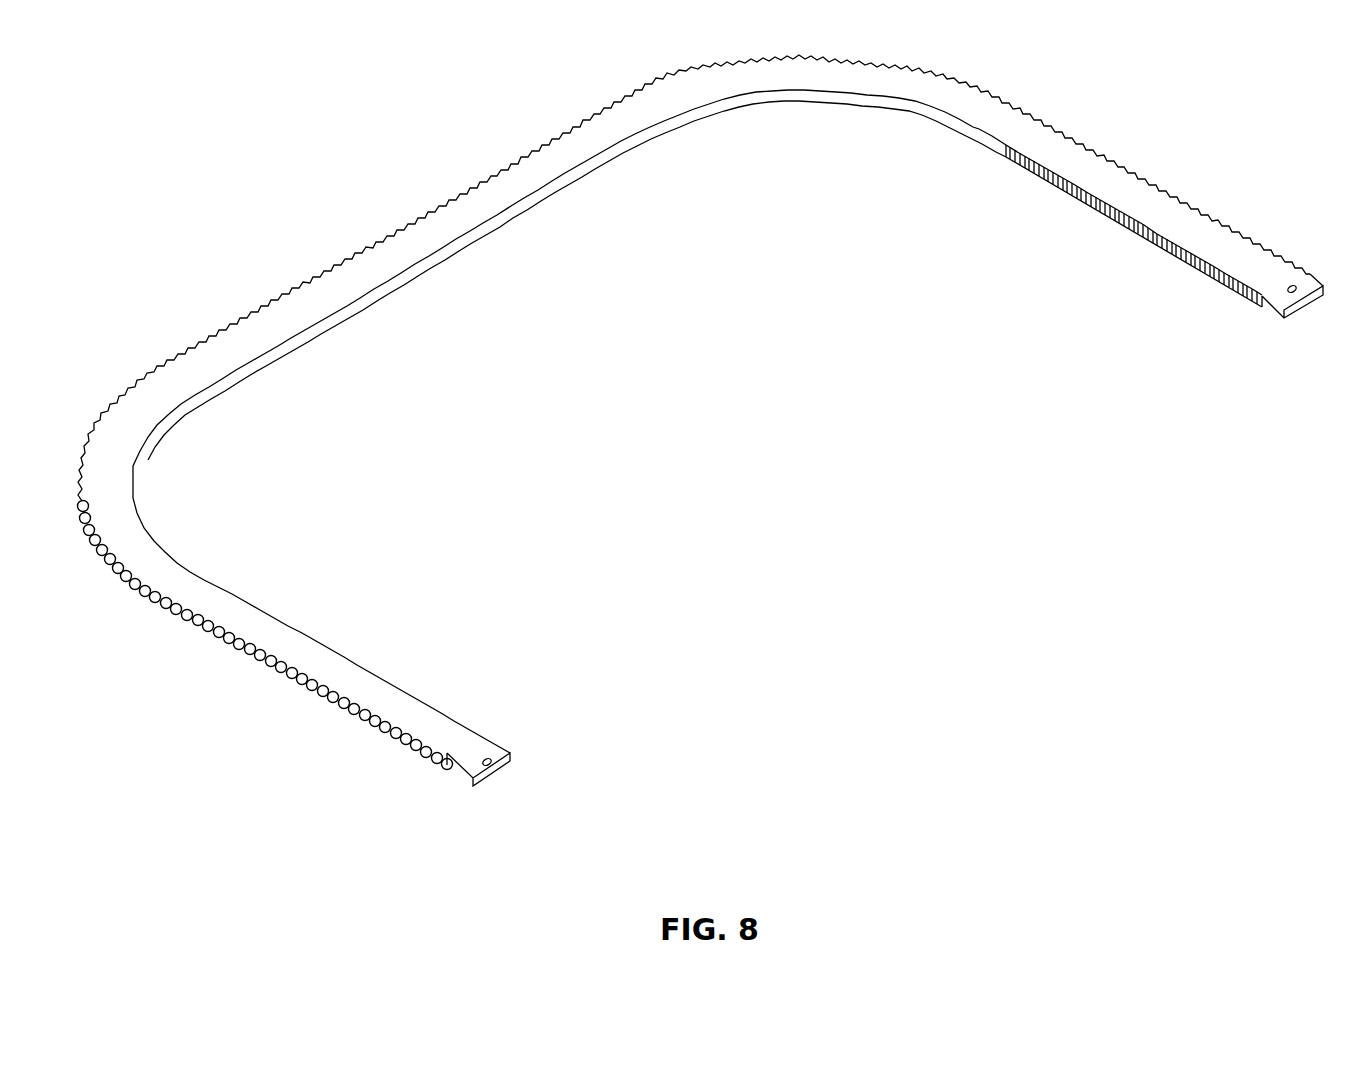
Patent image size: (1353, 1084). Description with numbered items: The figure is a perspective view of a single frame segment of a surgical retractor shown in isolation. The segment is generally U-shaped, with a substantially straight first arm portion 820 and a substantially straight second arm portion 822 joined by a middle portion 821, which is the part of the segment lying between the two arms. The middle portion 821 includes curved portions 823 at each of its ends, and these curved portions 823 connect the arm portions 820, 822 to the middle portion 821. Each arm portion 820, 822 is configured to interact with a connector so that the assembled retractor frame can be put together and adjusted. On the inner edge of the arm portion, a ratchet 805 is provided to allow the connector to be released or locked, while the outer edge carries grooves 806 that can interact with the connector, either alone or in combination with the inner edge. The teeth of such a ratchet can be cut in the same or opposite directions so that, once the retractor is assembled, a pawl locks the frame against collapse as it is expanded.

The ratchet 805 is at (1125, 223).
The grooves 806 is at (363, 720).
The first arm portion 820 is at (701, 443).
The middle portion 821 is at (435, 233).
The second arm portion 822 is at (1243, 265).
The curved portions 823 is at (783, 78).